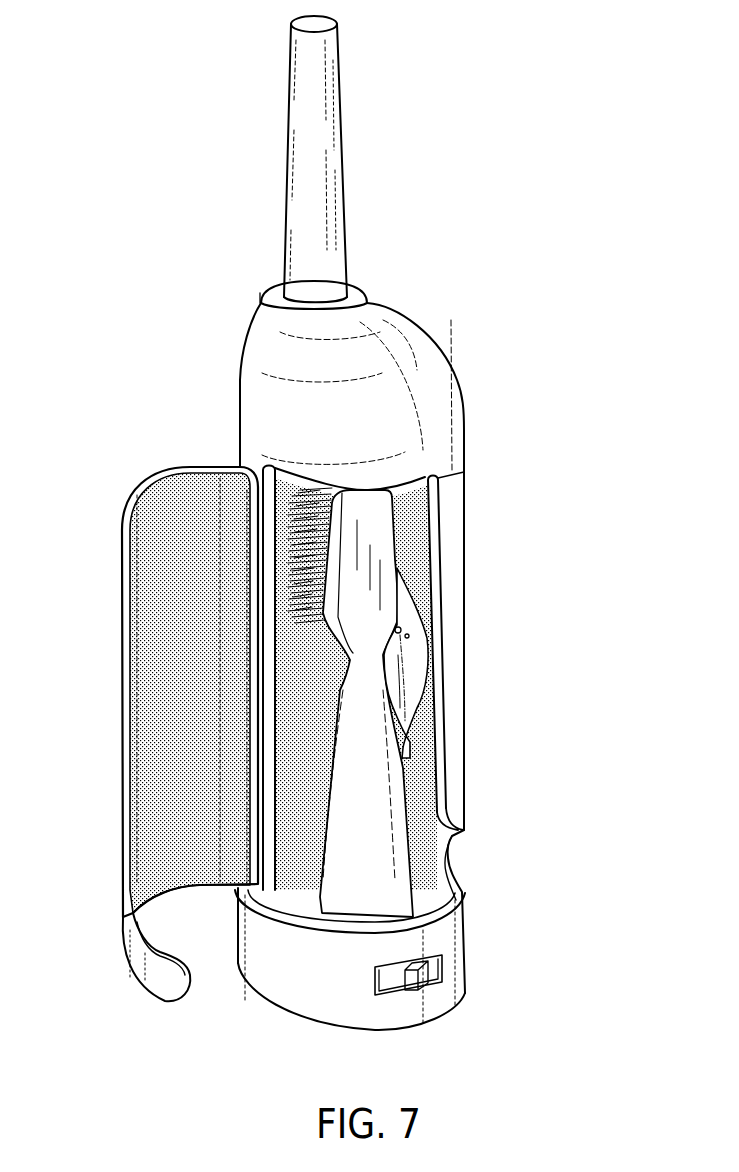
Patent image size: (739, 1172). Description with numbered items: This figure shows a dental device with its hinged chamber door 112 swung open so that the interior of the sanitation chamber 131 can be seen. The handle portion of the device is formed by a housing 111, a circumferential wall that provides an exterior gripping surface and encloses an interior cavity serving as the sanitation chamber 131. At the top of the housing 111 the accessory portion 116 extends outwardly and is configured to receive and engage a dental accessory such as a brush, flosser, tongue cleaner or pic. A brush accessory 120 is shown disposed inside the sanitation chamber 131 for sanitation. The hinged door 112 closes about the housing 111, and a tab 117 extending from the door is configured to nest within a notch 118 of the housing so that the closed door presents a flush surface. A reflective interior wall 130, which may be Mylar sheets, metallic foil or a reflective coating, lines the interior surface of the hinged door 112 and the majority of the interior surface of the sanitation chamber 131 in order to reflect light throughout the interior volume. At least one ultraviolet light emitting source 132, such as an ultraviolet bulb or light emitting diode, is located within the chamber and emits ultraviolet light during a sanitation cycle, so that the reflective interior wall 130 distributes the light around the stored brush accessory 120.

The housing 111 is at (448, 412).
The hinged access door 112 is at (139, 649).
The accessory portion 116 is at (328, 117).
The tab 117 is at (163, 982).
The notch 118 is at (455, 860).
The brush accessory 120 is at (377, 883).
The reflective interior wall 130 is at (177, 493).
The sanitation chamber 131 is at (422, 507).
The ultraviolet light emitting source 132 is at (417, 670).